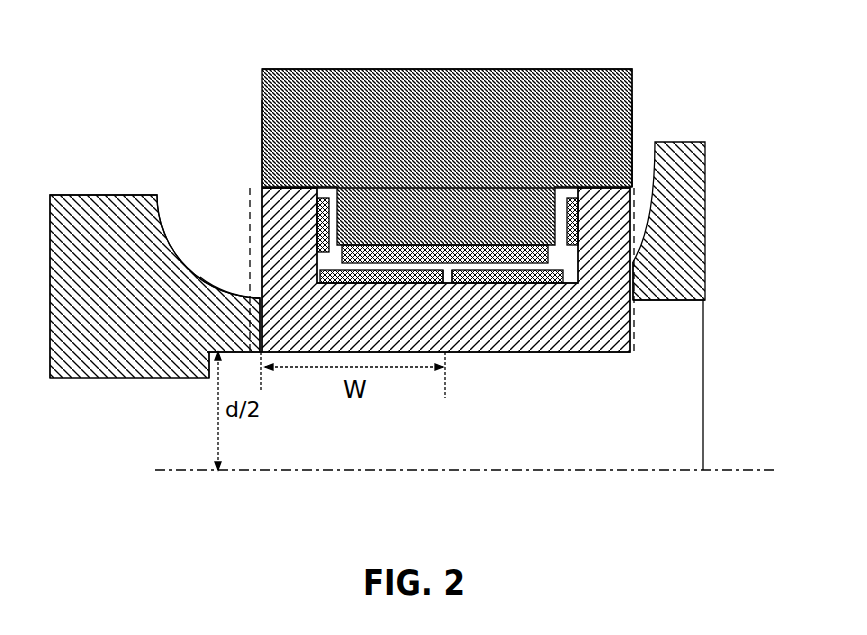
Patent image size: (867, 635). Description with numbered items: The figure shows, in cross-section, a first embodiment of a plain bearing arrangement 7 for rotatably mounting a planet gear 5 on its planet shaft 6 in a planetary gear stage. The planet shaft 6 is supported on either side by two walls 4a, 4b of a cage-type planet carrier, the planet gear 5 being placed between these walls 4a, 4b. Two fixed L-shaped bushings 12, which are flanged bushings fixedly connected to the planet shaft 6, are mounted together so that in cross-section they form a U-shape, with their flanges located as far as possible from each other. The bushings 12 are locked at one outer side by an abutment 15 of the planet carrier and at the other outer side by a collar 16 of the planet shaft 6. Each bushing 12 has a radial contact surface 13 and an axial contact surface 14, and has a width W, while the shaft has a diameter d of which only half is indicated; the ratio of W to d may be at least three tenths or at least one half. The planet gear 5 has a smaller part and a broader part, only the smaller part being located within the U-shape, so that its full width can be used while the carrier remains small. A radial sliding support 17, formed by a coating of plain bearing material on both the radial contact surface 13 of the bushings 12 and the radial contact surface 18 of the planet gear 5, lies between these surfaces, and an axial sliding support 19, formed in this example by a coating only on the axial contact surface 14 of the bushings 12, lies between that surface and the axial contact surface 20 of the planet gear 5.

The wall 4a is at (117, 203).
The wall 4b is at (700, 146).
The planet gear 5 is at (595, 72).
The planet shaft 6 is at (683, 417).
The plain bearing arrangement 7 is at (643, 260).
The fixed L-shaped bushing 12 is at (262, 236).
The radial contact surface 13 is at (387, 283).
The axial contact surface 14 is at (262, 184).
The abutment 15 is at (211, 288).
The collar 16 is at (675, 318).
The radial sliding support 17 is at (552, 270).
The radial contact surface 18 is at (512, 245).
The axial sliding support 19 is at (262, 147).
The axial contact surface 20 is at (421, 124).